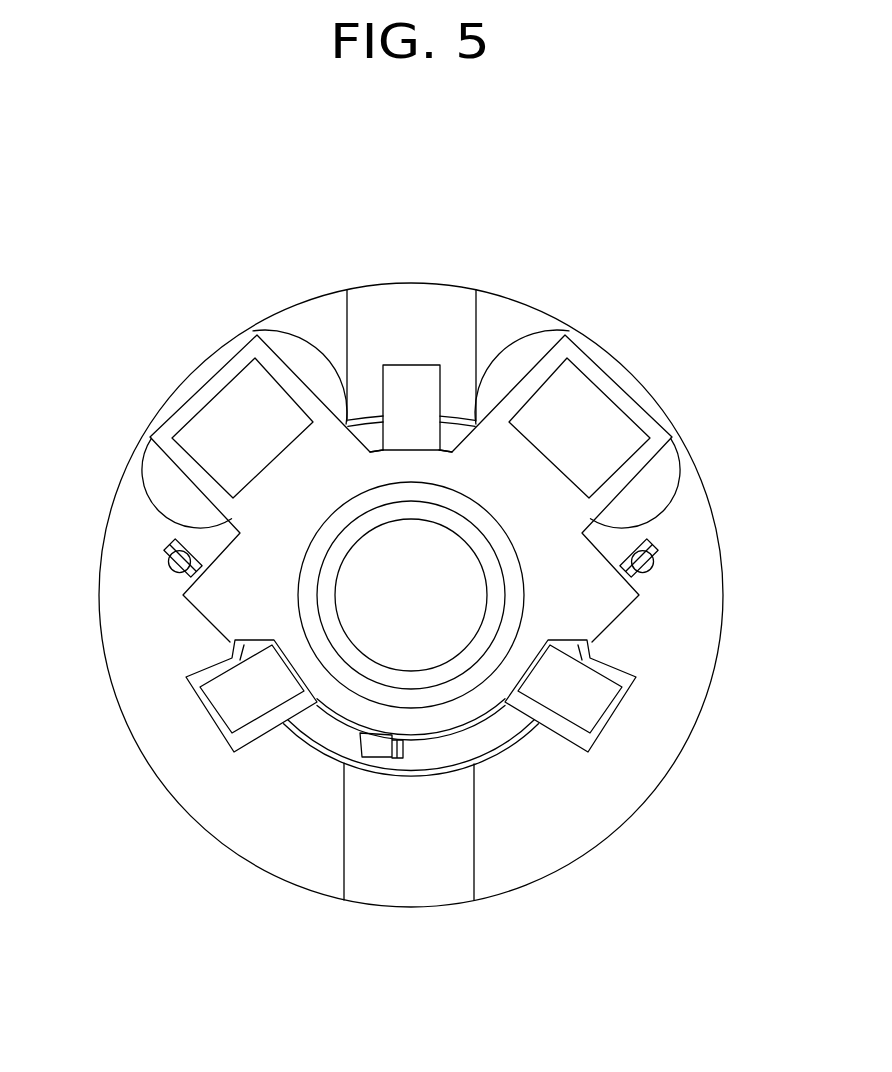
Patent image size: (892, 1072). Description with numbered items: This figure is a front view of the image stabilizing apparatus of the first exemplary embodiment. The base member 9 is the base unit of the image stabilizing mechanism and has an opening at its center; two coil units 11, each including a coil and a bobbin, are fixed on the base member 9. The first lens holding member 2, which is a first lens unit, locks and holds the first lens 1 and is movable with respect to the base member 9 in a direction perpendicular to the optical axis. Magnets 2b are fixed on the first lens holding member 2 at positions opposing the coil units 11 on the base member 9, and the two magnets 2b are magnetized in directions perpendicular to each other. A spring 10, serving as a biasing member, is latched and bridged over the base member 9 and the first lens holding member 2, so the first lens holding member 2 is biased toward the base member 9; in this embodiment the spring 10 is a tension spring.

The first lens 1 is at (367, 592).
The first lens holding member 2 is at (535, 605).
The magnets 2b is at (197, 413).
The base member 9 is at (697, 613).
The spring 10 is at (170, 567).
The coil units 11 is at (512, 355).